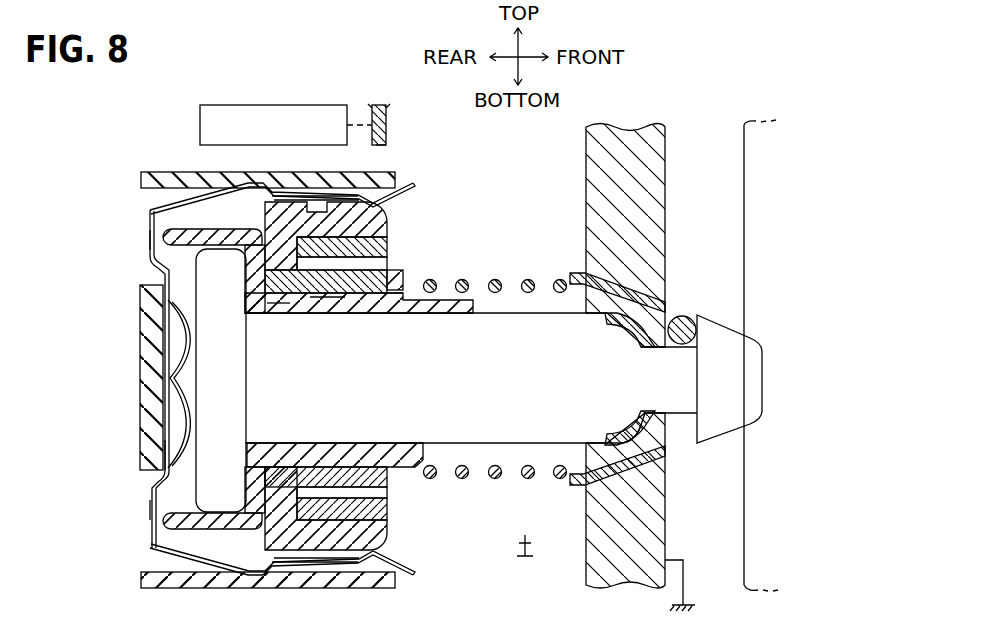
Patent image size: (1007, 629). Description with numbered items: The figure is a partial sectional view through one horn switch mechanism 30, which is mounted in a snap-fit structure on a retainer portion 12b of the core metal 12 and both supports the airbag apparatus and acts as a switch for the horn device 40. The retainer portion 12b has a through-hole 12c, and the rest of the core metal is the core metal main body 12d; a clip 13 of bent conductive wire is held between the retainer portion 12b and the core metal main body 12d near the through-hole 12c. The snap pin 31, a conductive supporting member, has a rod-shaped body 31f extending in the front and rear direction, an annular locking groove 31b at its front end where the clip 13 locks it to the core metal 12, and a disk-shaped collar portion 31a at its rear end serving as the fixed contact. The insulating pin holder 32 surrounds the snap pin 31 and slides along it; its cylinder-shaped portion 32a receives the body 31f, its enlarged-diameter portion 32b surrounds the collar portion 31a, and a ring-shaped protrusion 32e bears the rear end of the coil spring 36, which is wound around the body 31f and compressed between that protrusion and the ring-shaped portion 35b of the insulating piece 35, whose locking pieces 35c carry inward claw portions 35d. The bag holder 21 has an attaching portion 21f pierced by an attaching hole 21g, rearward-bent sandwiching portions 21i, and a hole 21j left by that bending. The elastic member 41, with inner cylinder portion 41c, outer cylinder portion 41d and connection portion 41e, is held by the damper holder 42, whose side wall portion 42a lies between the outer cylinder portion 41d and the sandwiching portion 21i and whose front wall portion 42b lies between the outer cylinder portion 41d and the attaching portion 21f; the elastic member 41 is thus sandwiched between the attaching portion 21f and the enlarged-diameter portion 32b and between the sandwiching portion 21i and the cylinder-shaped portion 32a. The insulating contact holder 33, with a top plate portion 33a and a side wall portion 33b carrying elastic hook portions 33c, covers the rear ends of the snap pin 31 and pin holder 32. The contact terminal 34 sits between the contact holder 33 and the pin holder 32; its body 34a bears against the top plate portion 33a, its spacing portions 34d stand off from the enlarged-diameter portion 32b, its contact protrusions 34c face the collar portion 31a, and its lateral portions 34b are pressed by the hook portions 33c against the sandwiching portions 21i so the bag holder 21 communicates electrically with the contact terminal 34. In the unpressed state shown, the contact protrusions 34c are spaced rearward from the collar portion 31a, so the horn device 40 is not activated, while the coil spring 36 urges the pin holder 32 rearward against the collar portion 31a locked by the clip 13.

The core metal 12 is at (703, 354).
The retainer portion 12b is at (622, 140).
The through-hole 12c is at (615, 468).
The core metal main body 12d is at (744, 127).
The clip 13 is at (690, 316).
The bag holder 21 is at (388, 118).
The attaching portion 21f is at (386, 538).
The attaching hole 21g is at (383, 492).
The sandwiching portion 21i is at (323, 200).
The hole 21j is at (384, 146).
The horn switch mechanism 30 is at (131, 135).
The snap pin 31 is at (446, 369).
The collar portion 31a is at (242, 407).
The locking groove 31b is at (633, 427).
The body 31f is at (512, 320).
The pin holder 32 is at (284, 353).
The cylinder-shaped portion 32a is at (334, 447).
The enlarged-diameter portion 32b is at (165, 228).
The ring-shaped protrusion 32e is at (400, 270).
The contact holder 33 is at (275, 395).
The top plate portion 33a is at (141, 335).
The side wall portion 33b is at (205, 590).
The hook portion 33c is at (418, 183).
The contact terminal 34 is at (151, 548).
The body 34a is at (160, 455).
The lateral portion 34b is at (252, 190).
The contact protrusion 34c is at (194, 382).
The spacing portion 34d is at (149, 245).
The piece 35 is at (610, 295).
The ring-shaped portion 35b is at (578, 492).
The locking piece 35c is at (635, 325).
The claw portion 35d is at (662, 350).
The coil spring 36 is at (473, 480).
The horn device 40 is at (200, 126).
The elastic member 41 is at (417, 350).
The inner cylinder portion 41c is at (327, 305).
The outer cylinder portion 41d is at (388, 308).
The connection portion 41e is at (270, 315).
The damper holder 42 is at (265, 530).
The side wall portion 42a is at (372, 218).
The front wall portion 42b is at (384, 247).